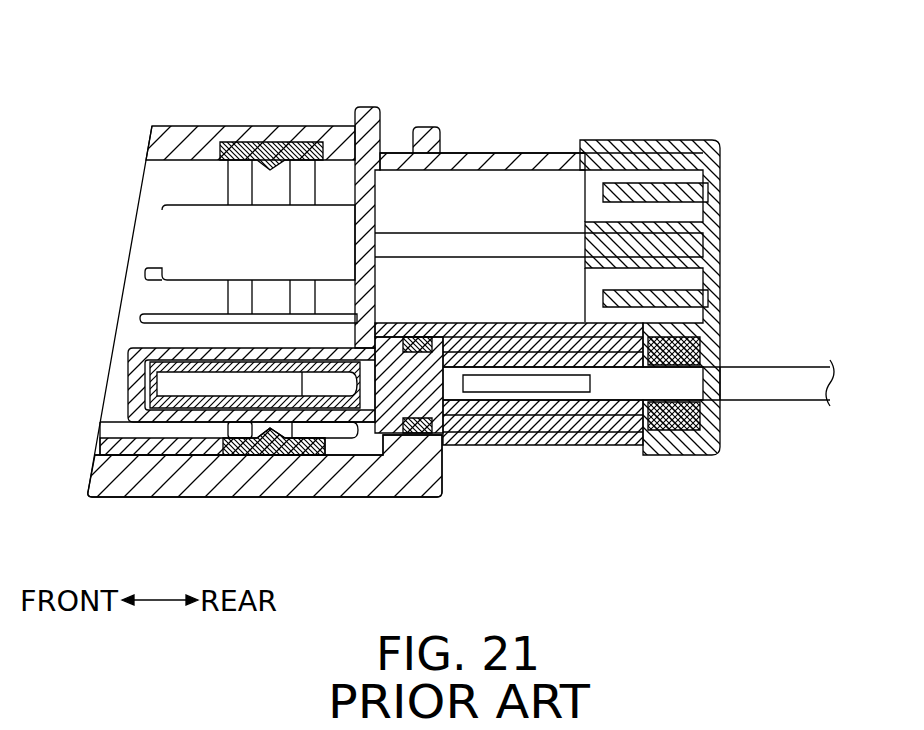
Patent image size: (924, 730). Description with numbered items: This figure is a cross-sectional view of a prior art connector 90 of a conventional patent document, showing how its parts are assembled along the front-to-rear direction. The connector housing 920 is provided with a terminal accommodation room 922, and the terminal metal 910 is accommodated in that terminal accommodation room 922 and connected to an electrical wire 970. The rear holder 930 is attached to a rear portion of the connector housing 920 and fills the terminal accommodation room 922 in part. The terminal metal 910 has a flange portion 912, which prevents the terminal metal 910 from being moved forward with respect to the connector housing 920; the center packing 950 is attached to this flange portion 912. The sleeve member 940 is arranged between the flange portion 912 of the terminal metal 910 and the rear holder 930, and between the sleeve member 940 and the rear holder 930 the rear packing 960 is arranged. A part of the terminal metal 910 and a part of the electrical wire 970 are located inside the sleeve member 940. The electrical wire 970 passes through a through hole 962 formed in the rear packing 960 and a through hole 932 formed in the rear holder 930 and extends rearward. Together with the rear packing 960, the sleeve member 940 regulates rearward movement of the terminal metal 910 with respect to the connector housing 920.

The connector 90 is at (393, 39).
The terminal metal 910 is at (368, 423).
The flange portion 912 is at (442, 440).
The connector housing 920 is at (465, 158).
The terminal accommodation room 922 is at (538, 345).
The rear holder 930 is at (720, 210).
The through hole 932 is at (712, 392).
The sleeve member 940 is at (566, 425).
The center packing 950 is at (422, 433).
The rear packing 960 is at (695, 333).
The through hole 962 is at (665, 400).
The electrical wire 970 is at (763, 367).